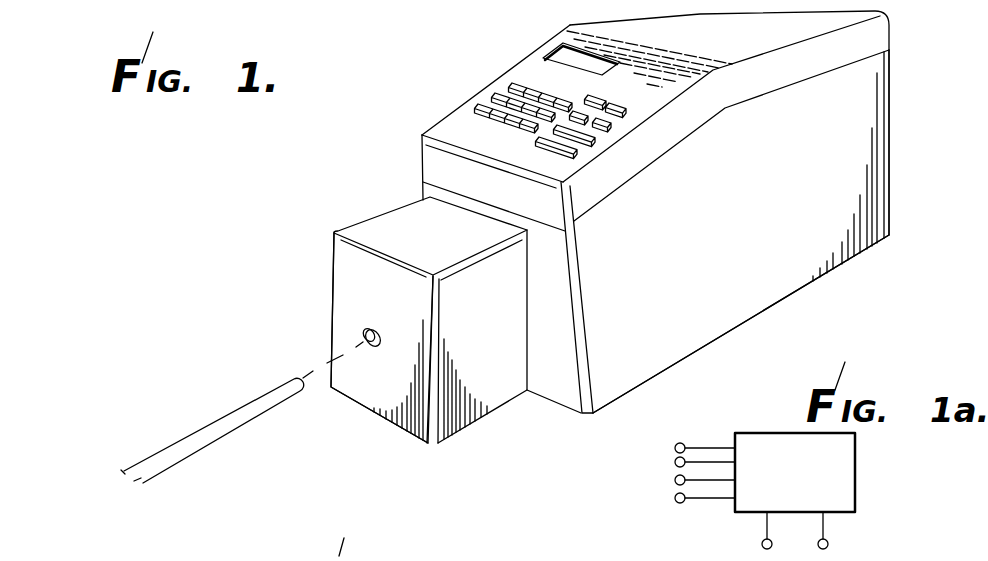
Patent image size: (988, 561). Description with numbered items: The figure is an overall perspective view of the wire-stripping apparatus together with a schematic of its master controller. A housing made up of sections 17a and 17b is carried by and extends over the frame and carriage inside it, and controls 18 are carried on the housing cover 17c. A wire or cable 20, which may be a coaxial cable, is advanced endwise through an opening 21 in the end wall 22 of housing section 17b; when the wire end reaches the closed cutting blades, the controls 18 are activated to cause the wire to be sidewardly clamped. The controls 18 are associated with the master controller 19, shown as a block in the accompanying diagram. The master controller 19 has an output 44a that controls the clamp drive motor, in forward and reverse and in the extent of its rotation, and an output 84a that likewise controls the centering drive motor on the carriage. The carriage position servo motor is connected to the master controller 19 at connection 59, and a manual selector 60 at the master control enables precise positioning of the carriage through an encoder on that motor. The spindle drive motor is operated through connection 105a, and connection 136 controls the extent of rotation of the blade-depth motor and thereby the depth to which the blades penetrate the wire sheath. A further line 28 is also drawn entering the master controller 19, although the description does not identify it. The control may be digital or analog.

In FIG. 1, the housing section 17a is at (806, 262).
In FIG. 1, the housing section 17b is at (363, 228).
In FIG. 1, the housing cover 17c is at (447, 121).
In FIG. 1, the controls 18 is at (494, 84).
In FIG. 1, the wire or cable 20 is at (199, 434).
In FIG. 1, the opening 21 is at (368, 348).
In FIG. 1, the end wall 22 is at (341, 283).
In FIG. 1, the manual selector 60 is at (526, 80).
In FIG. 1A, the master controller 19 is at (795, 472).
In FIG. 1A, the signal line 28 is at (707, 446).
In FIG. 1A, the output of master control 44a is at (675, 461).
In FIG. 1A, the connection of servo motor to master control 59 is at (675, 480).
In FIG. 1A, the output of master control 84a is at (697, 502).
In FIG. 1A, the connection 136 is at (764, 529).
In FIG. 1A, the connection 105a is at (826, 528).